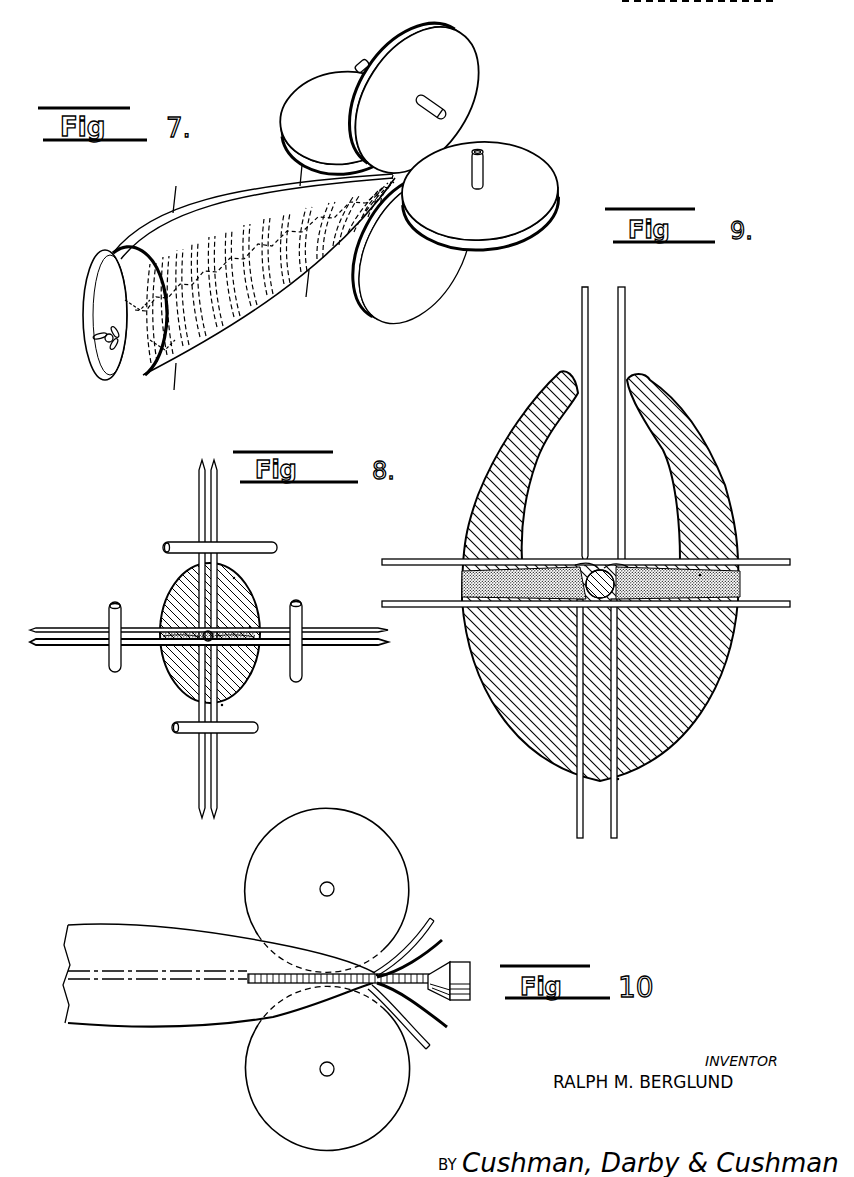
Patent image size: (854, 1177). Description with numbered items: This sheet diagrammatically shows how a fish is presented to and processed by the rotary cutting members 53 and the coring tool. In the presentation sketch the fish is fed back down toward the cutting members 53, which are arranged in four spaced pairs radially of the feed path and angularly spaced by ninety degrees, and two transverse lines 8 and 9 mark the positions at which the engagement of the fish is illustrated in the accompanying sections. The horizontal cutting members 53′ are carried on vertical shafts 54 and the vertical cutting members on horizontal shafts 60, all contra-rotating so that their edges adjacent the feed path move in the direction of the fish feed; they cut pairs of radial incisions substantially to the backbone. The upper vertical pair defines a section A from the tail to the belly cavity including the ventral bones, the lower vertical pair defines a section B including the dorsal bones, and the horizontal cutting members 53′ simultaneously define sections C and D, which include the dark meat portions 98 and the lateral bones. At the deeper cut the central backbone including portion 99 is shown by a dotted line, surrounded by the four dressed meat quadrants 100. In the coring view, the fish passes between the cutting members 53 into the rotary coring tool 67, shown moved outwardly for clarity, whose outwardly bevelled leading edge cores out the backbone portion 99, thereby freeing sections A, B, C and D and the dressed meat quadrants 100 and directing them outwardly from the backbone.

In FIG. 7, the section line 8— 8 is at (308, 170).
In FIG. 7, the section line 9— 9 is at (164, 203).
In FIG. 10, the rotary cutting members 53 is at (381, 818).
In FIG. 8, the horizontal cutting members 53′ is at (330, 632).
In FIG. 9, the horizontal cutting members 53′ is at (752, 562).
In FIG. 8, the vertical shafts 54 is at (298, 626).
In FIG. 8, the horizontal shafts 60 is at (247, 735).
In FIG. 10, the rotary coring tool 67 is at (464, 962).
In FIG. 8, the dark meat portions 98 is at (165, 650).
In FIG. 9, the dark meat portions 98 is at (451, 607).
In FIG. 9, the backbone including portion 99 is at (630, 578).
In FIG. 8, the dressed meat quadrants 100 is at (243, 600).
In FIG. 9, the dressed meat quadrants 100 is at (510, 443).
In FIG. 10, the dressed meat quadrants 100 is at (434, 941).
In FIG. 8, the section A is at (235, 577).
In FIG. 10, the section A is at (377, 975).
In FIG. 8, the section B is at (222, 705).
In FIG. 9, the section B is at (618, 779).
In FIG. 8, the section C is at (161, 620).
In FIG. 9, the section C is at (466, 545).
In FIG. 10, the section C is at (403, 935).
In FIG. 8, the section D is at (251, 626).
In FIG. 9, the section D is at (700, 575).
In FIG. 10, the section D is at (423, 1048).